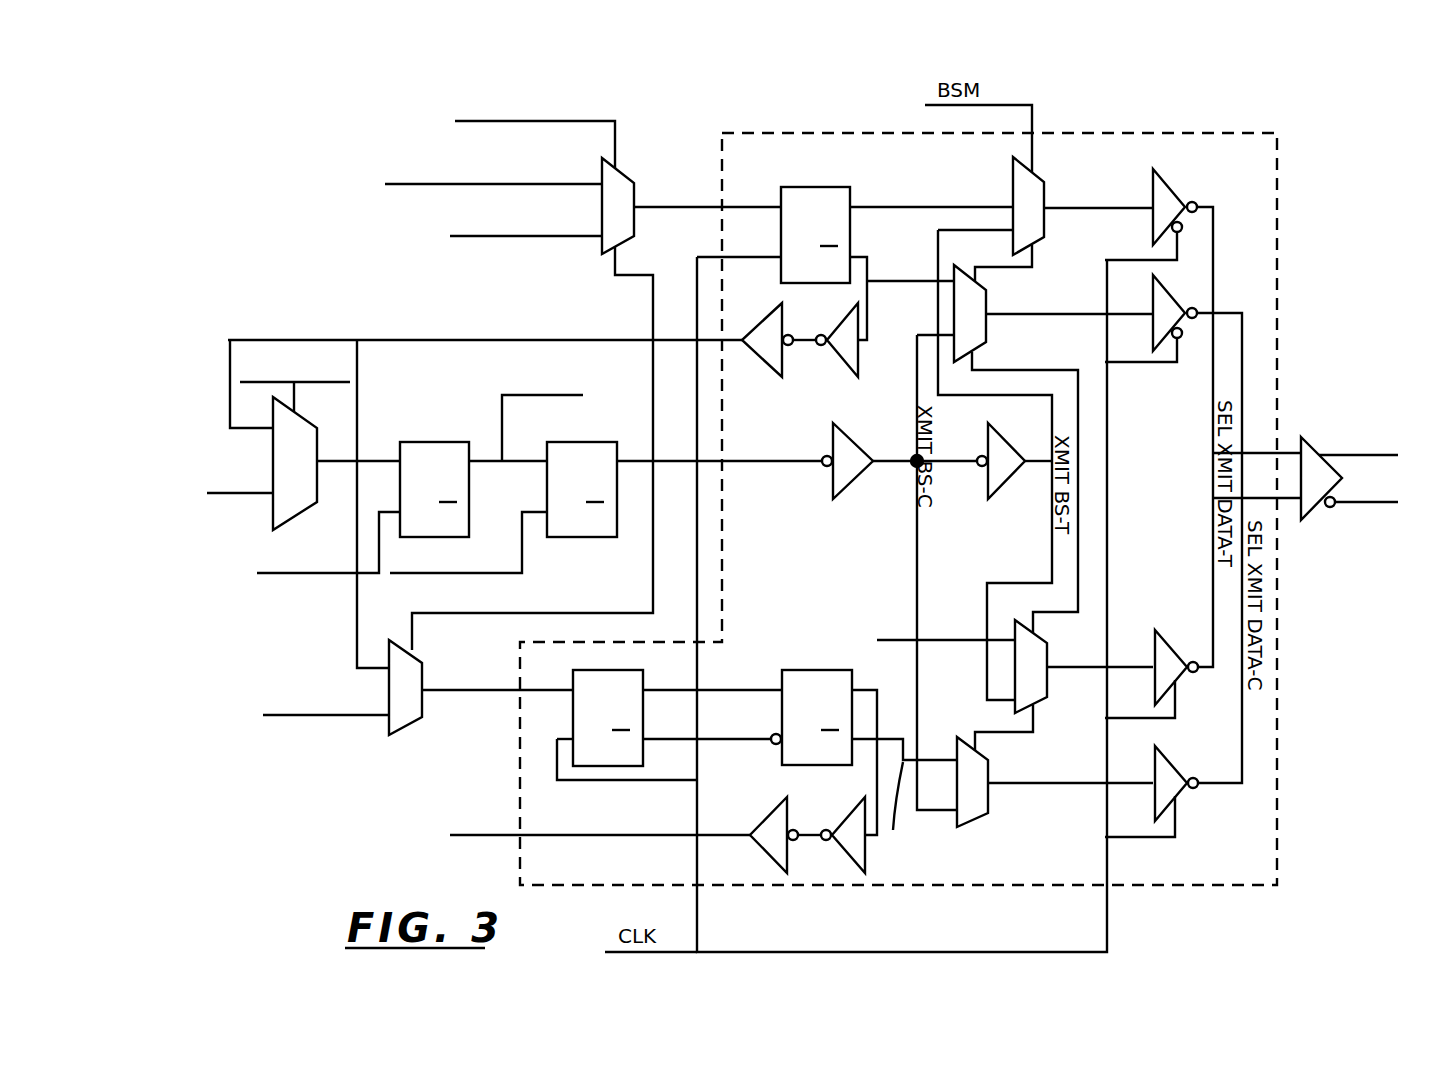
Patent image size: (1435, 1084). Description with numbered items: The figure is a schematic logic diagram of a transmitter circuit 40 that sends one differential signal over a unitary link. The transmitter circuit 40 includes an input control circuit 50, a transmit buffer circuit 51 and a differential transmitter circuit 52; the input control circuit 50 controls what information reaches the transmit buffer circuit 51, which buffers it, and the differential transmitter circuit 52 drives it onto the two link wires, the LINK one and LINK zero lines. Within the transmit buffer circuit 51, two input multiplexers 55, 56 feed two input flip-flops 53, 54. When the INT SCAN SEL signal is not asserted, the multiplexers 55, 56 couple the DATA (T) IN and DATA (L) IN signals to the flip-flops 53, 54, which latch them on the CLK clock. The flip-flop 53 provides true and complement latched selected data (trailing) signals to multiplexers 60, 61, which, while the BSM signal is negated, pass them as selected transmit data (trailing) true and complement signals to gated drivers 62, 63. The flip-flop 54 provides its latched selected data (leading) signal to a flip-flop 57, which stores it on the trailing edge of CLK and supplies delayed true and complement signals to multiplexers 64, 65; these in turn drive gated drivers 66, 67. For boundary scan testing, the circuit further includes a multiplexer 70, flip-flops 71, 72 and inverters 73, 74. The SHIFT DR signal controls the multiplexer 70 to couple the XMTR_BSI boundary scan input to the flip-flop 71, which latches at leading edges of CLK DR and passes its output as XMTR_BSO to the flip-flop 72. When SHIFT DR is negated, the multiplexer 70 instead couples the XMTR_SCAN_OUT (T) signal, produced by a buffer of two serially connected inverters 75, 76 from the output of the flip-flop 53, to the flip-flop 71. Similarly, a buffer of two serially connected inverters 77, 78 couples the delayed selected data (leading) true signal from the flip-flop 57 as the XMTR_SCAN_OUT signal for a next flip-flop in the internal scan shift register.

The transmitter circuit 40 is at (296, 110).
The input control circuit 50 is at (386, 772).
The transmit buffer circuit 51 is at (898, 509).
The differential transmitter circuit 52 is at (1305, 435).
The input flip-flop 53 is at (802, 185).
The input flip-flop 54 is at (603, 672).
The input multiplexer 55 is at (602, 252).
The input multiplexer 56 is at (417, 656).
The flip-flop 57 is at (820, 670).
The multiplexer 60 is at (1038, 176).
The multiplexer 61 is at (978, 348).
The gated driver 62 is at (1165, 180).
The gated driver 63 is at (1163, 295).
The multiplexer 64 is at (1003, 620).
The multiplexer 65 is at (950, 738).
The gated driver 66 is at (1165, 642).
The gated driver 67 is at (1168, 763).
The multiplexer 70 is at (270, 522).
The flip-flop 71 is at (416, 438).
The flip-flop 72 is at (562, 440).
The inverter 73 is at (843, 494).
The inverter 74 is at (998, 494).
The inverter 75 is at (775, 377).
The inverter 76 is at (852, 377).
The inverter 77 is at (783, 803).
The inverter 78 is at (861, 803).